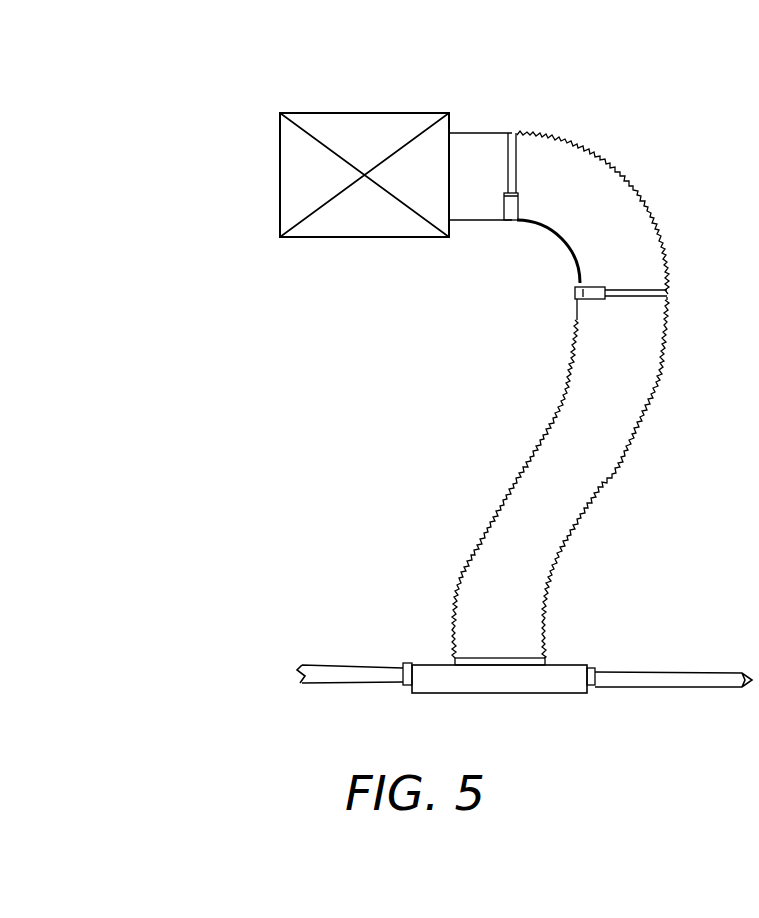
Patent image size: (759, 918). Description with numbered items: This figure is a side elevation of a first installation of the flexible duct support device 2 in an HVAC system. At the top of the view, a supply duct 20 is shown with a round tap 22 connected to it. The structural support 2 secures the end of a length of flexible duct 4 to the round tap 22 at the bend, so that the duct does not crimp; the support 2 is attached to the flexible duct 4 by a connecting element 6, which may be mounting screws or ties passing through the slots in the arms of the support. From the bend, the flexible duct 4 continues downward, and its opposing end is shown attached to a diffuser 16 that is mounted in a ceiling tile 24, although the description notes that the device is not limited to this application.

The supply duct 20 is at (280, 113).
The round tap 22 is at (490, 133).
The structural support 2 is at (553, 243).
The connecting element 6 is at (652, 290).
The flexible duct 4 is at (606, 442).
The diffuser 16 is at (587, 694).
The ceiling tile 24 is at (294, 677).